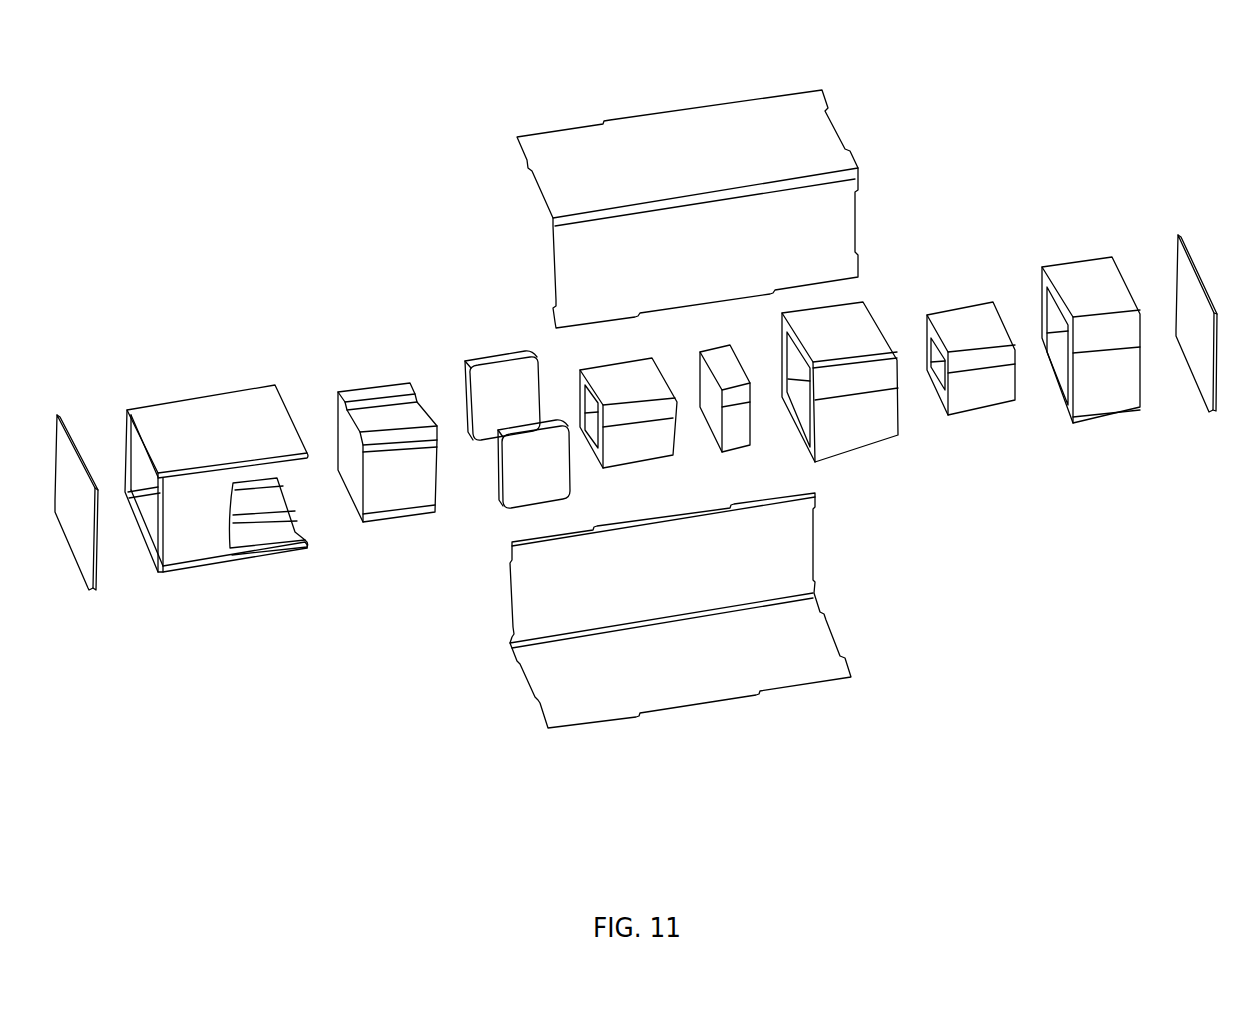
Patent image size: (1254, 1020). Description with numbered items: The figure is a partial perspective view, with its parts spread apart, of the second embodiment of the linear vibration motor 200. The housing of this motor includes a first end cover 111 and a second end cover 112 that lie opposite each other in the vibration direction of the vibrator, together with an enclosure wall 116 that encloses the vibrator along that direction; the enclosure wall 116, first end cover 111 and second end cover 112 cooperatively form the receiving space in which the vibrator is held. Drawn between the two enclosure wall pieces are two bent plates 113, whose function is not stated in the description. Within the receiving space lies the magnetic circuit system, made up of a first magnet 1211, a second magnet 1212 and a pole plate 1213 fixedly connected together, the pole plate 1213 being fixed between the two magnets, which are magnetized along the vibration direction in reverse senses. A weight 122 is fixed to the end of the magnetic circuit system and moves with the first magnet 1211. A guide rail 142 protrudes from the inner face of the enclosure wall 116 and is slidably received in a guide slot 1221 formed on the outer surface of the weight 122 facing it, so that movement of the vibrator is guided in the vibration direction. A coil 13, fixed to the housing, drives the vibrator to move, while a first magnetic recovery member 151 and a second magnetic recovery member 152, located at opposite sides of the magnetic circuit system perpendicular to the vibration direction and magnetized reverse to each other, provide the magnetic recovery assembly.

The linear vibration motor 200 is at (664, 50).
The first end cover 111 is at (77, 533).
The second end cover 112 is at (1203, 350).
The bent plate 113 is at (585, 170).
The enclosure wall 116 is at (208, 432).
The weight 122 is at (388, 392).
The guide slot 1221 is at (392, 417).
The guide rail 142 is at (265, 503).
The first magnetic recovery member 151 is at (510, 362).
The second magnetic recovery member 152 is at (562, 473).
The first magnet 1211 is at (633, 370).
The second magnet 1212 is at (957, 320).
The pole plate 1213 is at (740, 432).
The coil 13 is at (877, 415).